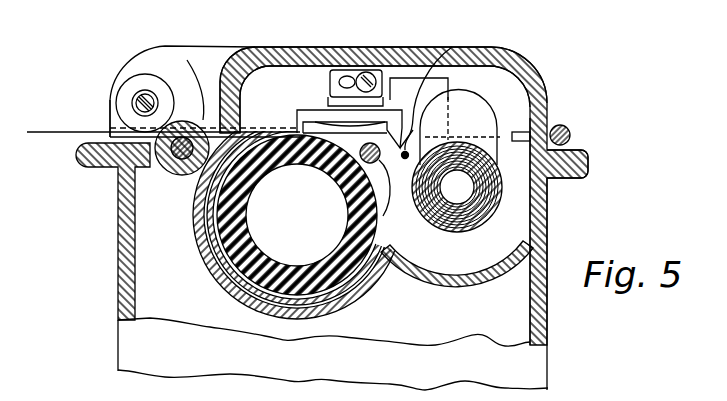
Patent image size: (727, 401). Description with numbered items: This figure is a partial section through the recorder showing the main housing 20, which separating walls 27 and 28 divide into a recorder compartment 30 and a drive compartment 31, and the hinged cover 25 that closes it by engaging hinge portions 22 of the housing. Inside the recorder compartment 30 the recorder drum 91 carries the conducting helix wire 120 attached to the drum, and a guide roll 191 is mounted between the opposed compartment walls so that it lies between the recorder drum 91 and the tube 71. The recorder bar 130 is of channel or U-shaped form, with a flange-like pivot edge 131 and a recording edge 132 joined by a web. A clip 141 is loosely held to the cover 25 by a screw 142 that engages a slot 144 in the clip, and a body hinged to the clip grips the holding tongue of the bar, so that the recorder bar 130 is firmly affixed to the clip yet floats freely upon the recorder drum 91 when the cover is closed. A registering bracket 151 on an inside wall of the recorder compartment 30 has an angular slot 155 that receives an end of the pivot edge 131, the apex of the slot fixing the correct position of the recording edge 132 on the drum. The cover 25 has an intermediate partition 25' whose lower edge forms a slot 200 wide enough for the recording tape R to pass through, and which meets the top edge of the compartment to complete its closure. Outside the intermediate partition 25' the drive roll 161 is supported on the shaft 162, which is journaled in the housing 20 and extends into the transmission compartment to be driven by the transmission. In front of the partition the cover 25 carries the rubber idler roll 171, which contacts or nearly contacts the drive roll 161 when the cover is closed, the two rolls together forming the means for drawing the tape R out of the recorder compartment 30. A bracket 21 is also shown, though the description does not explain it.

The housing 20 is at (112, 283).
The recording edge 132 is at (277, 40).
The intermediate partition 25' is at (206, 72).
The cover 25 is at (176, 77).
The separating wall 27 is at (138, 236).
The drive compartment 31 is at (510, 315).
The flange 21 is at (585, 172).
The hinge portions 22 is at (571, 133).
The registering bracket 151 is at (413, 150).
The pivot edge 131 is at (420, 143).
The tube 71 is at (480, 191).
The separating wall 28 is at (422, 273).
The recorder drum 91 is at (346, 304).
The helix wire 120 is at (283, 300).
The screw 142 is at (363, 62).
The shaft 162 is at (157, 143).
The drive roll 161 is at (168, 167).
The idler roll 171 is at (128, 90).
The slot 200 is at (203, 117).
The clip 141 is at (331, 78).
The slot 144 is at (354, 80).
The recorder bar 130 is at (316, 110).
The angular slot 155 is at (397, 86).
The guide roll 191 is at (394, 187).
The recorder compartment 30 is at (464, 243).
The recording strip or tape R is at (547, 213).